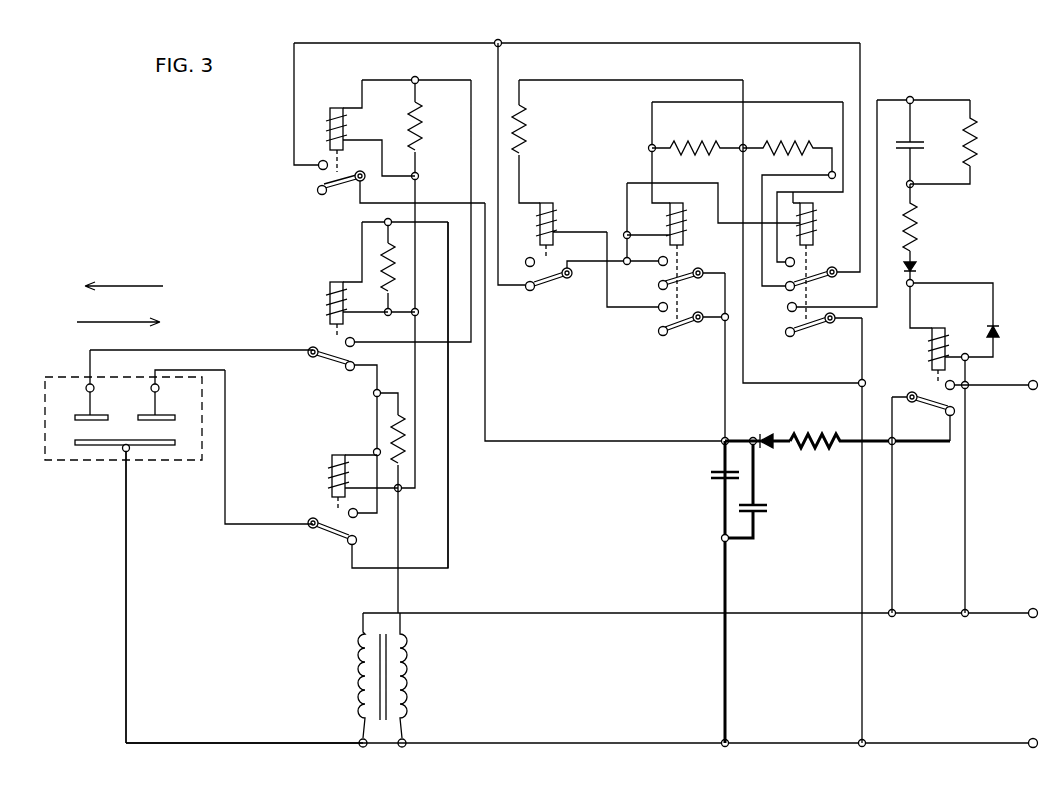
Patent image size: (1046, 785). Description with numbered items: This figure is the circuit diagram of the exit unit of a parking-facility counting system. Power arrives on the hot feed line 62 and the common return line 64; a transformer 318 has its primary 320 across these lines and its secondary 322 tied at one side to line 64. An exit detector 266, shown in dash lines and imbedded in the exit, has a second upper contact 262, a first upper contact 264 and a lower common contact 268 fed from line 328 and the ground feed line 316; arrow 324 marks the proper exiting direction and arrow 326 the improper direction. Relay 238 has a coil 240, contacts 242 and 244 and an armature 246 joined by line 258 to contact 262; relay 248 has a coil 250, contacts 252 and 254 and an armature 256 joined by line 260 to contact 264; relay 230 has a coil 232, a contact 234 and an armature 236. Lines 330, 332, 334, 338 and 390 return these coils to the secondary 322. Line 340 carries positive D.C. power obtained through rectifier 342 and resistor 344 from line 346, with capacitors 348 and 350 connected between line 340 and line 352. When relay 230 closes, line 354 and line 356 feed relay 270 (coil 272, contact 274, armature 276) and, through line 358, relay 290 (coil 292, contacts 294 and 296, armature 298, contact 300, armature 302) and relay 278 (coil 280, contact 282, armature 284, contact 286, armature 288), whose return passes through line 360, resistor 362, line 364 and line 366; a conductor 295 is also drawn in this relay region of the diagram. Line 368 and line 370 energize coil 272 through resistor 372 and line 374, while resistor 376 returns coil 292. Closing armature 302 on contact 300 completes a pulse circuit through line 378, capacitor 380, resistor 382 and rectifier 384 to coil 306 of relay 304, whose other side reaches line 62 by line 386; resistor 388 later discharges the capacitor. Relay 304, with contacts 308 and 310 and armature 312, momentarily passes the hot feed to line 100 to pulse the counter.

The hot feed line 62 is at (1002, 613).
The common return line 64 is at (975, 743).
The line to counter unit 100 is at (1000, 390).
The relay 230 is at (378, 284).
The coil 232 is at (345, 120).
The contact 234 is at (318, 167).
The armature 236 is at (341, 192).
The relay 238 is at (367, 366).
The coil 240 is at (330, 300).
The contact 242 is at (350, 371).
The contact 244 is at (353, 340).
The armature 246 is at (314, 358).
The relay 248 is at (394, 417).
The coil 250 is at (332, 470).
The contact 252 is at (349, 545).
The contact 254 is at (357, 516).
The armature 256 is at (320, 530).
The line 258 is at (270, 350).
The line 260 is at (258, 524).
The second upper contact 262 is at (75, 417).
The first upper contact 264 is at (157, 417).
The exit detector 266 is at (66, 377).
The lower common contact 268 is at (160, 445).
The relay 270 is at (580, 252).
The coil 272 is at (539, 216).
The contact 274 is at (529, 290).
The armature 276 is at (562, 284).
The relay 278 is at (669, 277).
The coil 280 is at (670, 222).
The contact 282 is at (659, 266).
The armature 284 is at (697, 280).
The contact 286 is at (659, 311).
The armature 288 is at (700, 325).
The relay 290 is at (810, 278).
The coil 292 is at (816, 218).
The contact 294 is at (787, 290).
The conductor 295 is at (843, 102).
The contact 296 is at (808, 288).
The armature 298 is at (834, 278).
The contact 300 is at (790, 312).
The armature 302 is at (818, 326).
The relay 304 is at (957, 371).
The coil 306 is at (930, 348).
The contact 308 is at (945, 386).
The contact 310 is at (950, 416).
The armature 312 is at (921, 403).
The ground feed line 316 is at (215, 743).
The transformer 318 is at (382, 680).
The primary 320 is at (358, 674).
The secondary 322 is at (408, 674).
The arrow 324 is at (136, 286).
The arrow 326 is at (104, 322).
The line 328 is at (128, 582).
The line 330 is at (450, 410).
The line 332 is at (380, 352).
The line 334 is at (400, 482).
The line 338 is at (417, 178).
The line 340 is at (568, 441).
The rectifier 342 is at (777, 430).
The resistor 344 is at (815, 450).
The line 346 is at (892, 458).
The capacitor 348 is at (712, 474).
The capacitor 350 is at (766, 510).
The line 352 is at (727, 570).
The line 354 is at (650, 43).
The line 356 is at (498, 72).
The line 358 is at (627, 195).
The line 360 is at (650, 149).
The resistor 362 is at (707, 142).
The line 364 is at (743, 166).
The line 366 is at (862, 402).
The line 368 is at (725, 412).
The line 370 is at (607, 305).
The resistor 372 is at (528, 112).
The line 374 is at (645, 80).
The resistor 376 is at (790, 145).
The line 378 is at (877, 300).
The capacitor 380 is at (930, 138).
The resistor 382 is at (918, 222).
The rectifier 384 is at (917, 267).
The line 386 is at (968, 534).
The resistor 388 is at (975, 150).
The line 390 is at (378, 378).